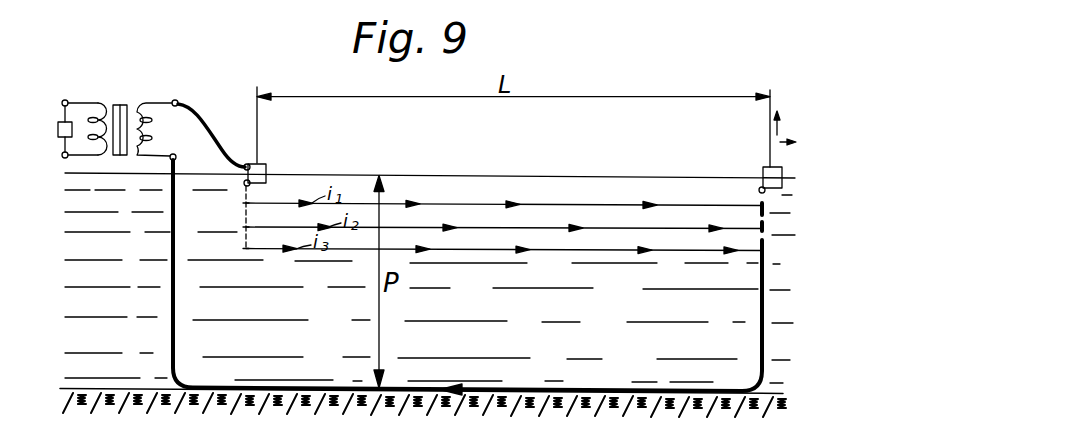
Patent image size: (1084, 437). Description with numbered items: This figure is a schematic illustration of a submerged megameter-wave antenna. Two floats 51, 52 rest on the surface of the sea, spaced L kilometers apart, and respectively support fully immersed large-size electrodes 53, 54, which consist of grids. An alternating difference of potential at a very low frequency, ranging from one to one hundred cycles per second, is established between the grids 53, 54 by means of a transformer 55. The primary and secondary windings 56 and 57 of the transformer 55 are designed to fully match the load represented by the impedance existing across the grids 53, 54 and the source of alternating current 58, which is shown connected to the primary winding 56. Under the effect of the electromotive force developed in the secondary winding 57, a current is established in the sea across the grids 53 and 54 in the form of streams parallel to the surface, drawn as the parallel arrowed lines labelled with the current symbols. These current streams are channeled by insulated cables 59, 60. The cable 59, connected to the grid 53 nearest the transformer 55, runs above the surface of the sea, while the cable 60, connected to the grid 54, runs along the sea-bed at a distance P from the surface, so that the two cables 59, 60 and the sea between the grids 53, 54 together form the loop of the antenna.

The float 51 is at (263, 163).
The float 52 is at (768, 166).
The electrode 53 is at (246, 205).
The electrode 54 is at (770, 206).
The transformer 55 is at (126, 104).
The primary winding 56 is at (98, 103).
The secondary winding 57 is at (150, 120).
The source of alternating current 58 is at (73, 122).
The insulated cable 59 is at (205, 118).
The insulated cable 60 is at (177, 341).